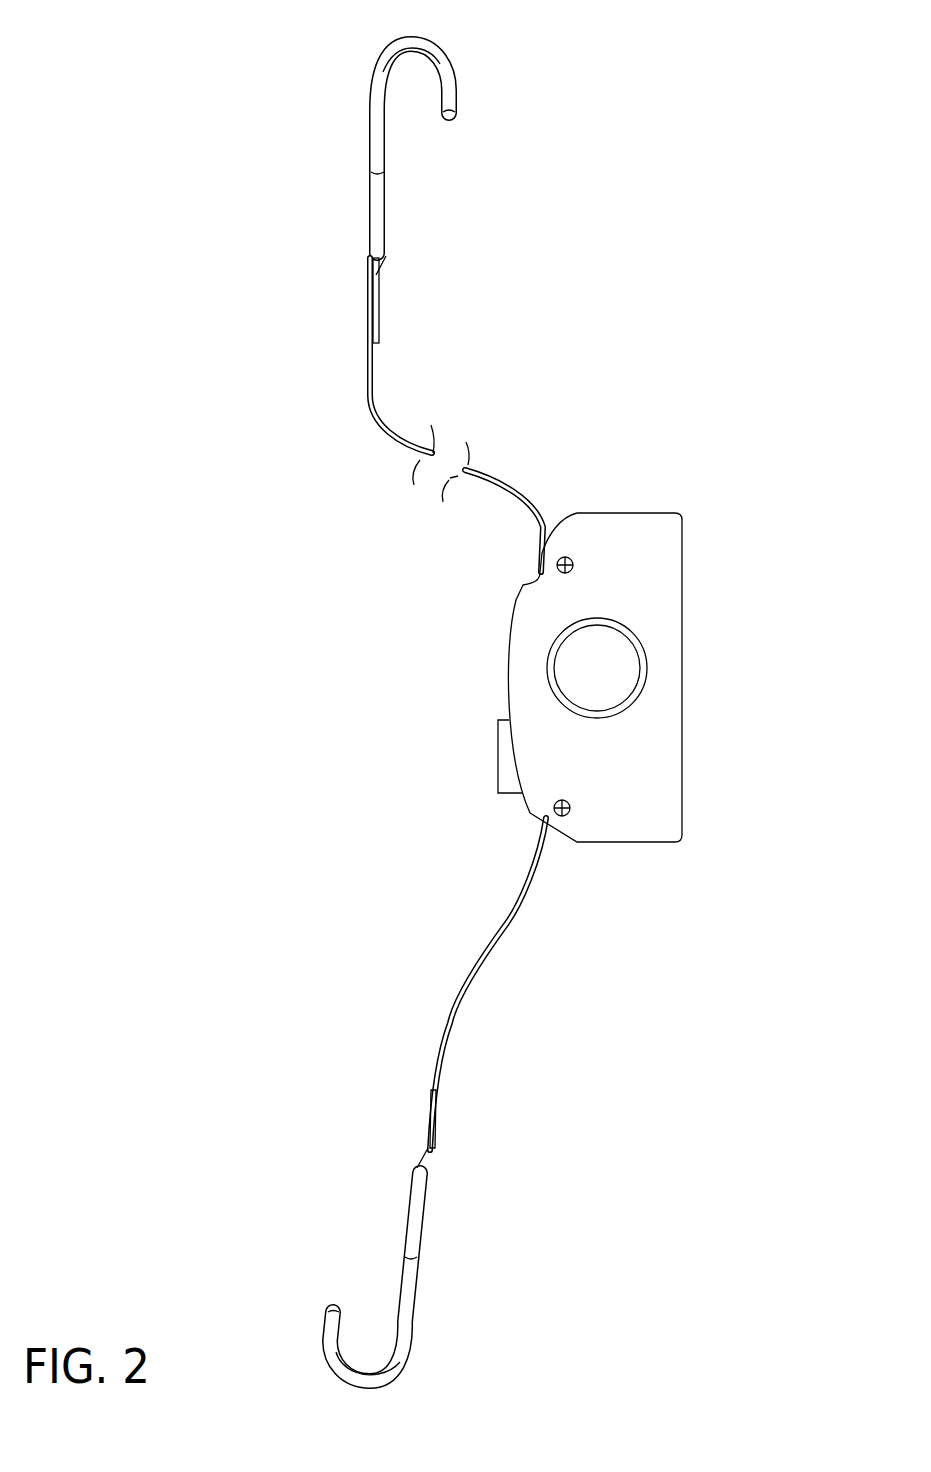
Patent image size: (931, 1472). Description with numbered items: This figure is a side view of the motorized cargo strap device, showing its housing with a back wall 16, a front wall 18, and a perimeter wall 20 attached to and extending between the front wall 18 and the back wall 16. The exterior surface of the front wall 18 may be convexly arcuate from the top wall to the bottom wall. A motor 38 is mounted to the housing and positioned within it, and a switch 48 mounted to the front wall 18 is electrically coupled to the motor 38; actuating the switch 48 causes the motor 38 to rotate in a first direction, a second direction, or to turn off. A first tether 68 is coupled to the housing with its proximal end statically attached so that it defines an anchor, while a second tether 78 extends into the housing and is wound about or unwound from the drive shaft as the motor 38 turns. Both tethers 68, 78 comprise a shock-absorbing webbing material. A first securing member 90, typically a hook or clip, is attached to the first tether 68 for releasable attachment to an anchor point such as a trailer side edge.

The back wall 16 is at (571, 677).
The front wall 18 is at (507, 657).
The perimeter wall 20 is at (652, 558).
The motor 38 is at (602, 685).
The switch 48 is at (450, 762).
The first tether 68 is at (330, 1045).
The second tether 78 is at (520, 322).
The first securing member 90 is at (450, 88).